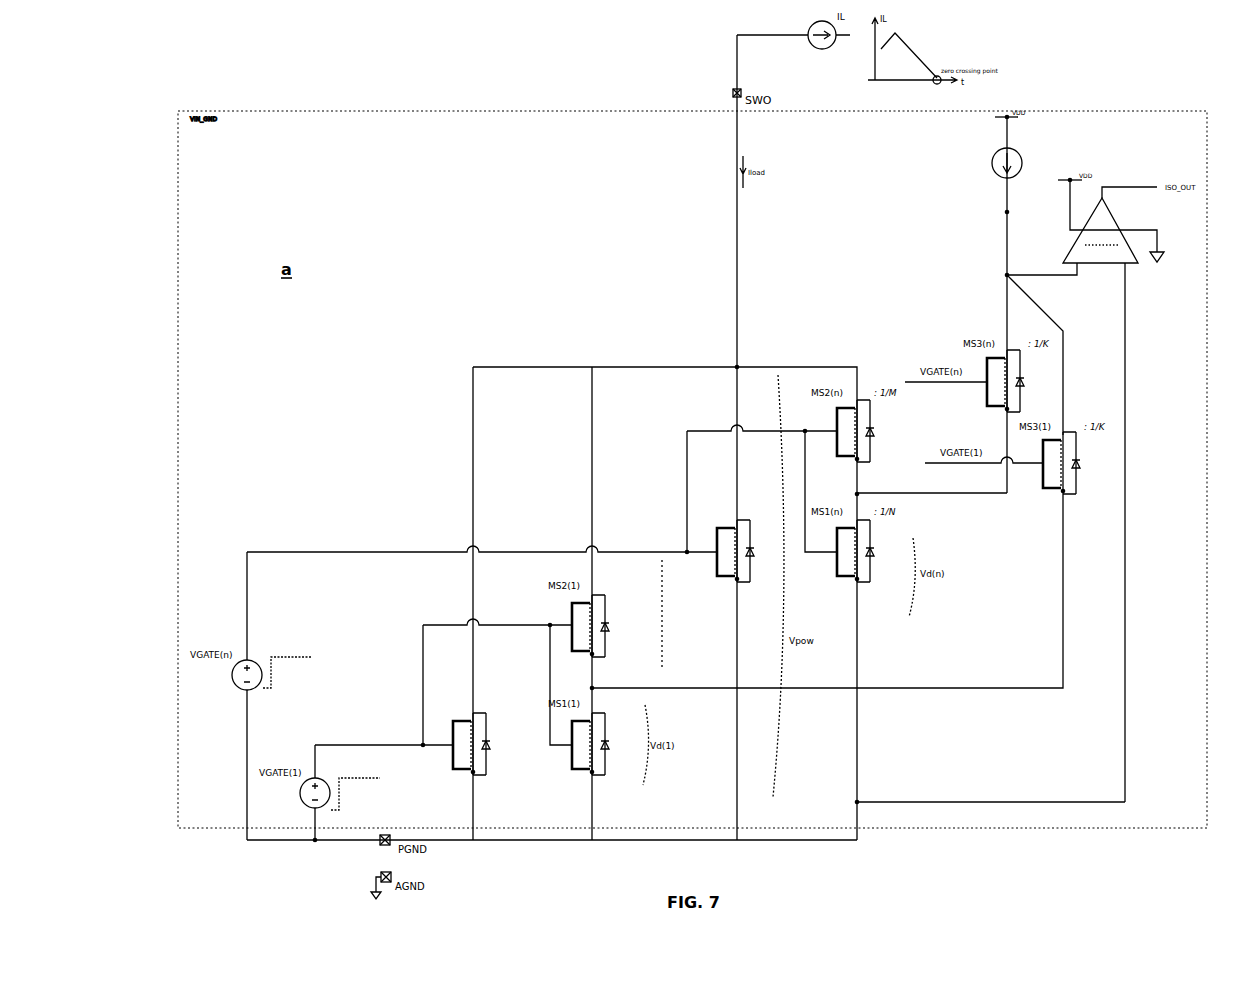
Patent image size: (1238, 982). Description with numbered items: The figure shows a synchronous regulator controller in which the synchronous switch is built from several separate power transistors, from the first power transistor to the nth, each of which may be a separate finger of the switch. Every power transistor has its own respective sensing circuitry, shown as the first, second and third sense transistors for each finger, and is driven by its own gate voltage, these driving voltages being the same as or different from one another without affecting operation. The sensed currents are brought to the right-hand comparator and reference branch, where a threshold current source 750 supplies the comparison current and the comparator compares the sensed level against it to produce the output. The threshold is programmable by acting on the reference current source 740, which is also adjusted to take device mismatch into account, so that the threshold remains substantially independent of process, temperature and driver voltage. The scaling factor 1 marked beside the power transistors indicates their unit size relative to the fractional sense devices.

The threshold current source 750 is at (990, 160).
The reference current source 740 is at (1096, 266).
The power transistor MPOW scaling ratio 1 is at (591, 641).